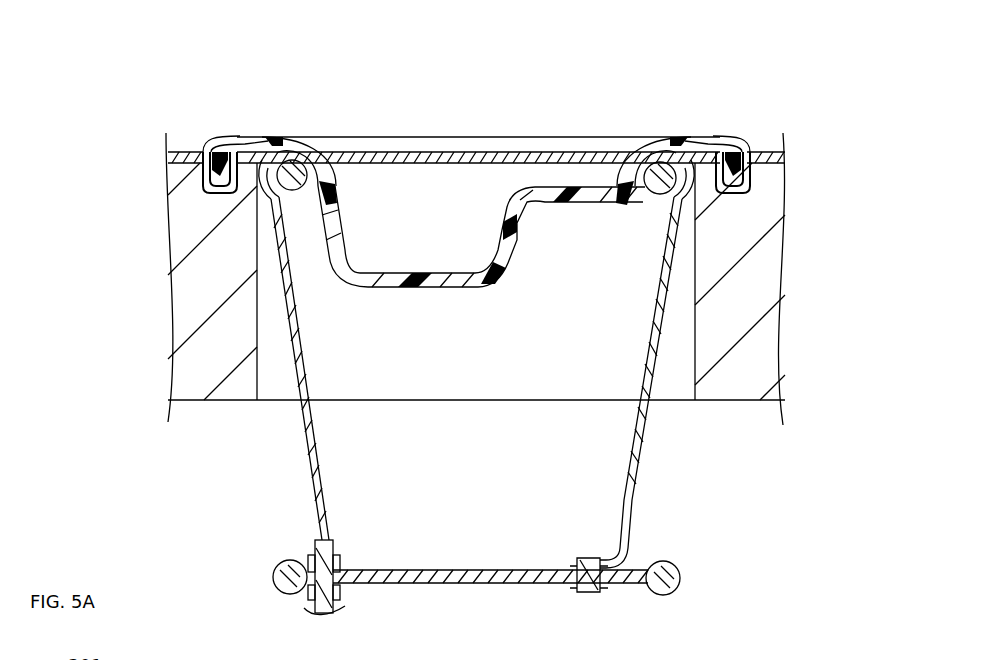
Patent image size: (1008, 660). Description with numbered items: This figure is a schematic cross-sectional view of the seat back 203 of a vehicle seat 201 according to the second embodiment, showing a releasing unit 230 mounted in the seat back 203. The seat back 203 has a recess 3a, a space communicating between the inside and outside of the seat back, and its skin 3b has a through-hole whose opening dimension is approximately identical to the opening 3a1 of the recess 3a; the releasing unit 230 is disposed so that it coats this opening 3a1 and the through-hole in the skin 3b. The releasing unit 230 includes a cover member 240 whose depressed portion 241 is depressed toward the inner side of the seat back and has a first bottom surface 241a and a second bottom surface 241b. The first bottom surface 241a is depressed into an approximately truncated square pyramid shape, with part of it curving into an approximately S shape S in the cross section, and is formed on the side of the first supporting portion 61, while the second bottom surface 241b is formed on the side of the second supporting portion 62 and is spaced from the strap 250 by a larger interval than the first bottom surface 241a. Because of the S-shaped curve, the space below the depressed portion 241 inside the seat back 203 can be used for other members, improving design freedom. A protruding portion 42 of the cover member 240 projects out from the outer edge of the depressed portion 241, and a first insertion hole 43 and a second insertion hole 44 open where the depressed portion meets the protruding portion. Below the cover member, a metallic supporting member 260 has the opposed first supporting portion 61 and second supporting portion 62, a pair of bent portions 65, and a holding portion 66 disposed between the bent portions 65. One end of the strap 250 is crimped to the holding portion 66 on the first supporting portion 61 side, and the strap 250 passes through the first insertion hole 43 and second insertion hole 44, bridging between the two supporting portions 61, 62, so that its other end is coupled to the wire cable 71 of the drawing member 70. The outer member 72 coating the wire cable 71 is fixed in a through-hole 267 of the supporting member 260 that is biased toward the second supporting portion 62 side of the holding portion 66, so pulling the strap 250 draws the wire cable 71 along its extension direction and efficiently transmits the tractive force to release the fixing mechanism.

The vehicle seat 201 is at (156, 52).
The seat back 203 is at (767, 80).
The skin 3b is at (180, 152).
The recess 3a is at (257, 367).
The opening 3a1 is at (231, 150).
The strap 250 is at (354, 152).
The releasing unit 230 is at (512, 142).
The protruding portion 42 is at (257, 145).
The first insertion hole 43 is at (668, 146).
The second insertion hole 44 is at (296, 140).
The second supporting portion 62 is at (277, 186).
The first supporting portion 61 is at (688, 174).
The supporting member 260 is at (485, 573).
The depressed portion 241 is at (481, 170).
The first bottom surface 241a is at (567, 188).
The second bottom surface 241b is at (441, 273).
The S shape S is at (418, 212).
The cover member 240 is at (565, 286).
The drawing member 70 is at (372, 560).
The wire cable 71 is at (333, 533).
The outer member 72 is at (334, 546).
The through-hole 267 is at (336, 608).
The holding portion 66 is at (545, 584).
The bent portion 65 is at (268, 585).